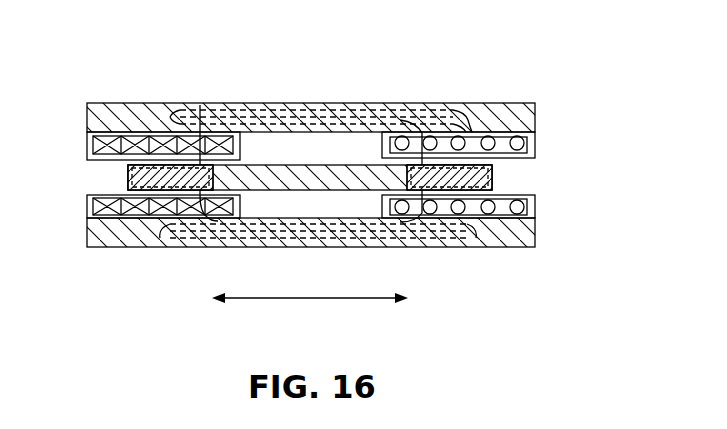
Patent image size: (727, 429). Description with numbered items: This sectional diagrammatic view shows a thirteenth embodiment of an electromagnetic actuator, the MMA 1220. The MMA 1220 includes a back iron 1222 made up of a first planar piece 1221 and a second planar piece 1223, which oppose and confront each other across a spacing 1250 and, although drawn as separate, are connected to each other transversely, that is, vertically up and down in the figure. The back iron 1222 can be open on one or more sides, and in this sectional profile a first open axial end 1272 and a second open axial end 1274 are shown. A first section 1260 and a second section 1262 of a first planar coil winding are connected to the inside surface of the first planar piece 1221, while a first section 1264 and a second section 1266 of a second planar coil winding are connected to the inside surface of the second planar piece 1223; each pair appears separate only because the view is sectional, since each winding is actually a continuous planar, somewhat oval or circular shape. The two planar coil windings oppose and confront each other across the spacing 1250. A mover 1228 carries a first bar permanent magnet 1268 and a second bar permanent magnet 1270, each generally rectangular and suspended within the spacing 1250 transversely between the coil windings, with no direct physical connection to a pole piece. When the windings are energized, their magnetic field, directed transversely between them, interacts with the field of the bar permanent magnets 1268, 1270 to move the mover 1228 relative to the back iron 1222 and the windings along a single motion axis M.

The MMA 1220 is at (144, 52).
The back iron 1222 is at (355, 92).
The second planar piece 1223 is at (312, 220).
The first planar piece 1221 is at (428, 123).
The mover 1228 is at (308, 148).
The spacing 1250 is at (353, 203).
The first section of first planar coil winding 1260 is at (215, 112).
The second section of first planar coil winding 1262 is at (487, 118).
The first section of second planar coil winding 1264 is at (124, 232).
The second section of second planar coil winding 1266 is at (496, 232).
The first bar permanent magnet 1268 is at (116, 175).
The second bar permanent magnet 1270 is at (507, 175).
The first open axial end 1272 is at (87, 115).
The second open axial end 1274 is at (513, 120).
The motion axis M is at (310, 298).